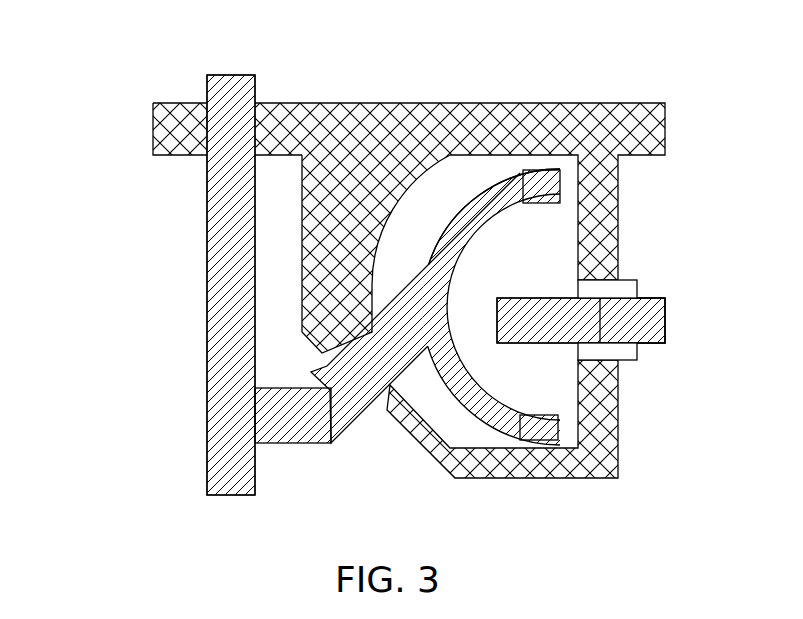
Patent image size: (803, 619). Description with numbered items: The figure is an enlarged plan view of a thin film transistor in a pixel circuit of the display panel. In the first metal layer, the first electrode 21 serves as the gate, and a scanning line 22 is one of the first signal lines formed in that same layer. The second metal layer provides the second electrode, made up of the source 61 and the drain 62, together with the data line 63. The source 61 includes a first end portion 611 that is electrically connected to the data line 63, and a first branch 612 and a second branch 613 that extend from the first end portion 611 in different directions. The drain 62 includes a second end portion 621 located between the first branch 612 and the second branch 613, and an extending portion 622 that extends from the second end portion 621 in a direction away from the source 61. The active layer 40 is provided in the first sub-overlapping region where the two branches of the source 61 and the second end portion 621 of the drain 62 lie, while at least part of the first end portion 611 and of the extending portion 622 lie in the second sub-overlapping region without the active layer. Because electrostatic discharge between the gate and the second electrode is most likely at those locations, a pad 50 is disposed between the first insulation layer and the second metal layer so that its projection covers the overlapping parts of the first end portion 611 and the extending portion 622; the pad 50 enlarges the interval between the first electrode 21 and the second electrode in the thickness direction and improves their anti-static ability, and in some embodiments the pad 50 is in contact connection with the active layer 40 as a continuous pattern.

The first electrode 21 is at (349, 197).
The scanning line 22 is at (600, 103).
The active layer 40 is at (458, 173).
The pad 50 is at (317, 393).
The source 61 is at (305, 290).
The first end portion 611 is at (353, 417).
The first branch 612 is at (520, 187).
The second branch 613 is at (540, 427).
The drain 62 is at (395, 267).
The second end portion 621 is at (552, 298).
The extending portion 622 is at (625, 313).
The data line 63 is at (240, 75).